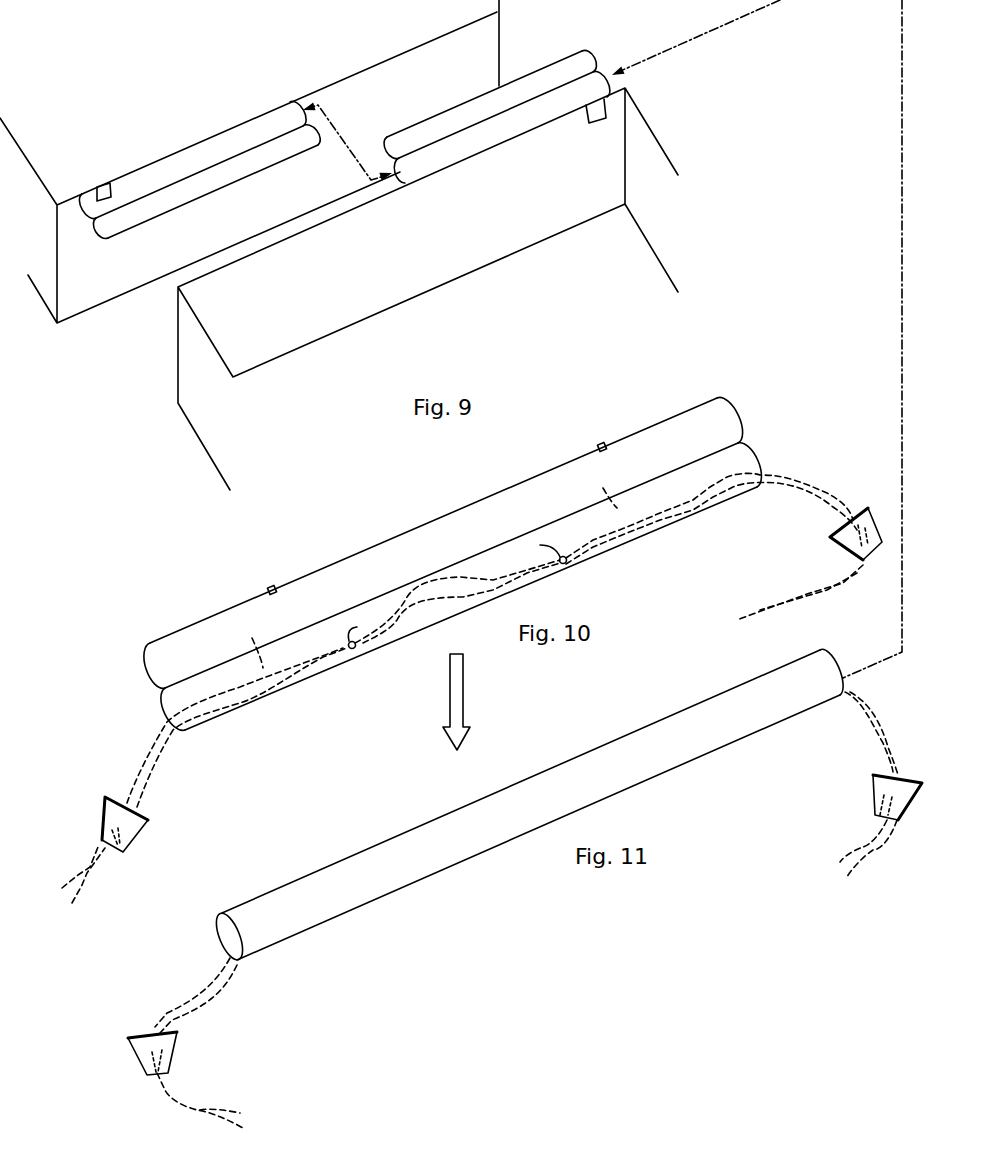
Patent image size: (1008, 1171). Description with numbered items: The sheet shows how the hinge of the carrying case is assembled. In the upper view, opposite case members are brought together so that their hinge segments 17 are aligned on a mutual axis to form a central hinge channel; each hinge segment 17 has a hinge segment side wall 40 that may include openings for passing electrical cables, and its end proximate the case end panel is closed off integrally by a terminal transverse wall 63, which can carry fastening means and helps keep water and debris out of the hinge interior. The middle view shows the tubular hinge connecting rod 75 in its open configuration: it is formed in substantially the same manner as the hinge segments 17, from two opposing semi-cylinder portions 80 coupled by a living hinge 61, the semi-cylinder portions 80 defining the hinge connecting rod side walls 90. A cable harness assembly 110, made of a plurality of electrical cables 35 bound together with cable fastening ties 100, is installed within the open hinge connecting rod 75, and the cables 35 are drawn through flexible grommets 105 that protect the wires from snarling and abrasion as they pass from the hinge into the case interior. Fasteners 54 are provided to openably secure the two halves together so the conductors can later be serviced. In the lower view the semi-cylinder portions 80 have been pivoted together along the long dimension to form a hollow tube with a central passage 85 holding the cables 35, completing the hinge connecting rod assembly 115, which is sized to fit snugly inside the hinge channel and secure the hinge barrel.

In FIG. 9, the hinge segment 17 is at (137, 143).
In FIG. 9, the hinge segment side wall 40 is at (208, 150).
In FIG. 9, the terminal transverse wall 63 is at (97, 223).
In FIG. 10, the fastener 54 is at (598, 448).
In FIG. 10, the living hinge 61 is at (683, 462).
In FIG. 10, the hinge connecting rod side wall 90 is at (178, 640).
In FIG. 10, the semi-cylinder portion 80 is at (150, 673).
In FIG. 10, the cable fastening tie 100 is at (353, 650).
In FIG. 10, the electrical cable 35 is at (166, 751).
In FIG. 10, the flexible grommet 105 is at (133, 827).
In FIG. 10, the cable harness assembly 110 is at (807, 463).
In FIG. 11, the hinge connecting rod assembly 115 is at (556, 745).
In FIG. 11, the central passage 85 is at (227, 933).
In FIG. 11, the hinge connecting rod 75 is at (390, 880).